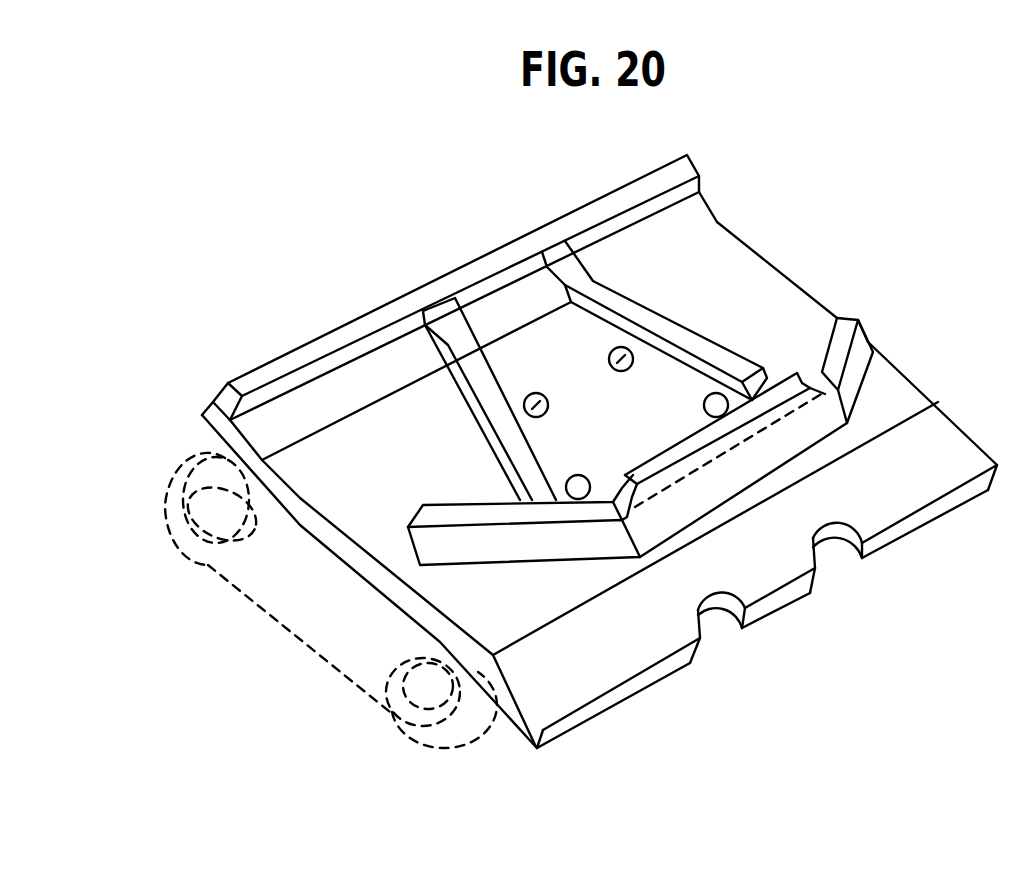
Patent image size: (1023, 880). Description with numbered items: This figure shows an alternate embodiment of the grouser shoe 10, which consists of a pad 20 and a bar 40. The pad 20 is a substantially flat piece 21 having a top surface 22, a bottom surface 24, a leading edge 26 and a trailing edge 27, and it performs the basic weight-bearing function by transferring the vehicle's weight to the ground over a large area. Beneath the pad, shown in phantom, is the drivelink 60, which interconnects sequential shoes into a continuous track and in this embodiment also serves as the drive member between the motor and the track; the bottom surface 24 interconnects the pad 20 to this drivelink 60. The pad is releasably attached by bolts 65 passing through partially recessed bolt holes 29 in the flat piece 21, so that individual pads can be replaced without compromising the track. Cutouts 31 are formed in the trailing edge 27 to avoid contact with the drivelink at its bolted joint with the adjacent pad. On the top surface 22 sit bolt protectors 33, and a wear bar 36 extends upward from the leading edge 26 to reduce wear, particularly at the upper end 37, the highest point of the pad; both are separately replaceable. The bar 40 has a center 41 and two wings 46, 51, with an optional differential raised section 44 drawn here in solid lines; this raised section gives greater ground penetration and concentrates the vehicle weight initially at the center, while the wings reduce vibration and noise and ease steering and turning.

The grouser shoe 10 is at (269, 219).
The pad 20 is at (777, 289).
The flat piece 21 is at (913, 373).
The top surface 22 is at (416, 381).
The bottom surface 24 is at (360, 571).
The leading edge 26 is at (308, 398).
The trailing edge 27 is at (598, 663).
The bolt holes 29 is at (528, 399).
The cutouts 31 is at (828, 560).
The bolt protectors 33 is at (705, 344).
The wear bar 36 is at (445, 286).
The upper end 37 is at (213, 401).
The bar 40 is at (722, 454).
The center 41 is at (743, 490).
The differential raised section 44 is at (659, 463).
The wing 46 is at (432, 516).
The wing 51 is at (861, 320).
The drivelink 60 is at (333, 638).
The bolts 65 is at (617, 368).